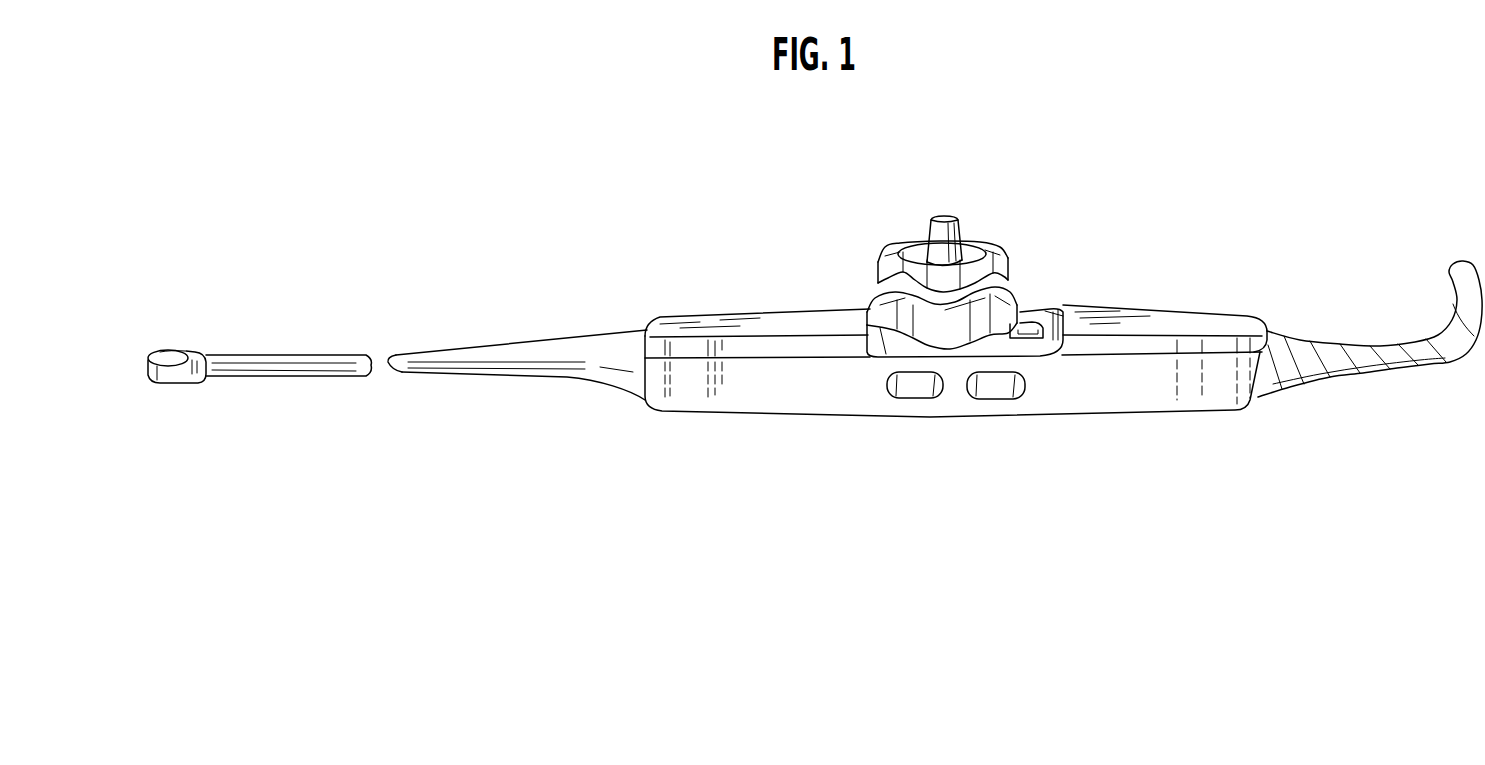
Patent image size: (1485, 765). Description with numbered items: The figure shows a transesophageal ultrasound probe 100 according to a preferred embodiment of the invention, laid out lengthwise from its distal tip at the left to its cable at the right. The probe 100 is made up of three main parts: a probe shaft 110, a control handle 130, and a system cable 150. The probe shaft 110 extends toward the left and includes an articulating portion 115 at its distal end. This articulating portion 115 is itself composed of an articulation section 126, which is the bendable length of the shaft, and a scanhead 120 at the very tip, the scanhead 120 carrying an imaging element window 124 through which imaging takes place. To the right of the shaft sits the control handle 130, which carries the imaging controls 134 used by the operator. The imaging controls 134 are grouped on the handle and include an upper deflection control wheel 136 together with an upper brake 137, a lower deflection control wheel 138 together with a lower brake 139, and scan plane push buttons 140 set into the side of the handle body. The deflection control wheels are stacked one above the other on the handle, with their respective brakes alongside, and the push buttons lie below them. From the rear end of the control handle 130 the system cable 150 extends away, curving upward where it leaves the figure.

The surgical instrument 100 is at (378, 574).
The shaft assembly 110 is at (648, 430).
The distal tip assembly 115 is at (283, 384).
The distal cap 120 is at (203, 312).
The cap end face 124 is at (176, 350).
The distal shaft segment 126 is at (212, 347).
The housing body 130 is at (1266, 456).
The knob assembly 134 is at (1000, 176).
The upper knob 136 is at (1004, 252).
The knob stem 137 is at (926, 231).
The lower knob 138 is at (1015, 290).
The knob base plate 139 is at (1053, 308).
The slots 140 is at (918, 390).
The handle 150 is at (1375, 373).